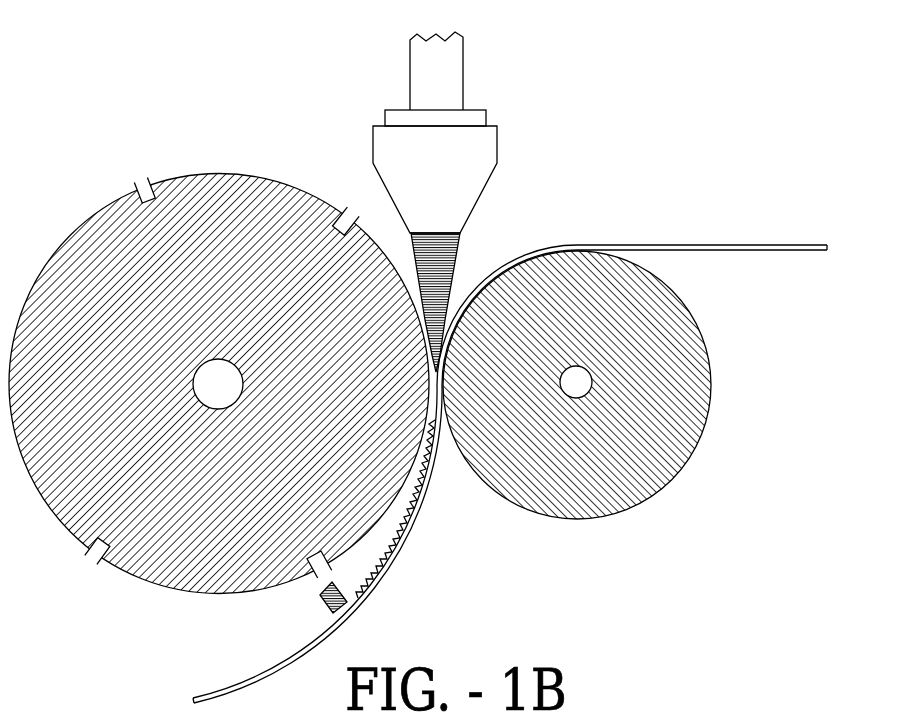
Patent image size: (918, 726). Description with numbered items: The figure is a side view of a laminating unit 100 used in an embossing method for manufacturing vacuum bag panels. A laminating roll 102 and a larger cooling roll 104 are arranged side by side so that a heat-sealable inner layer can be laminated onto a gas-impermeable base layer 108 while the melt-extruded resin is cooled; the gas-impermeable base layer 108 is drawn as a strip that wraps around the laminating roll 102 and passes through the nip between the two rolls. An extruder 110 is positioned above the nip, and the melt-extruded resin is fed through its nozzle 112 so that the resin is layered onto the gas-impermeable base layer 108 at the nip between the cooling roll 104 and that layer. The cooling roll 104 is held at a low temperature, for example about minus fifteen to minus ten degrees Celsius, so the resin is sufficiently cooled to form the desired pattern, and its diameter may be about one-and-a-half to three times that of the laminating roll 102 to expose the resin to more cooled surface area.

The laminating unit 100 is at (600, 98).
The laminating roll 102 is at (707, 408).
The cooling roll 104 is at (178, 203).
The gas-impermeable base layer 108 is at (723, 246).
The extruder 110 is at (490, 158).
The nozzle 112 is at (430, 223).